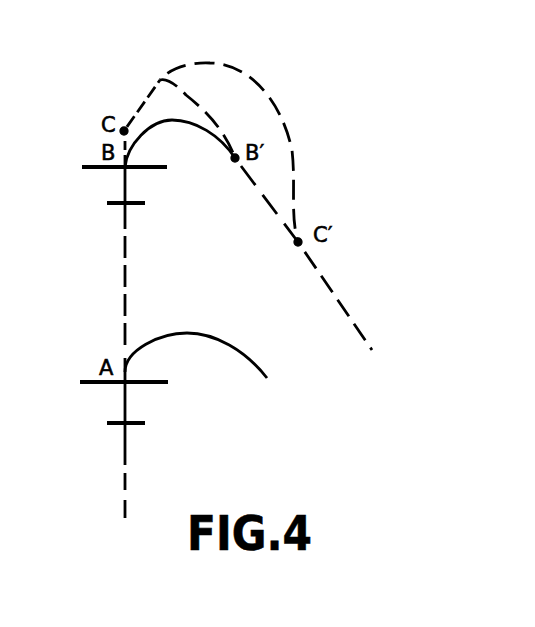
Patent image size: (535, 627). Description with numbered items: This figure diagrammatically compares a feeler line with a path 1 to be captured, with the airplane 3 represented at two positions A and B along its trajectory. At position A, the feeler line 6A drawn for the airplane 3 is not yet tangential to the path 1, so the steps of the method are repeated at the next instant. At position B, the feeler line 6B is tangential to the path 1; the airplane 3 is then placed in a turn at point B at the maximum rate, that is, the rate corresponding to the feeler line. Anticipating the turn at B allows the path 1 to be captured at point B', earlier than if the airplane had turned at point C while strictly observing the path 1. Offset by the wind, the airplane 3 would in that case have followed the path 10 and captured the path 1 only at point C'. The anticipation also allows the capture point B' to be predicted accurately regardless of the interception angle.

The path to be captured 1 is at (177, 95).
The airplane 3 is at (123, 186).
The feeler line 6A is at (249, 360).
The feeler line 6B is at (189, 124).
The path 10 is at (189, 71).